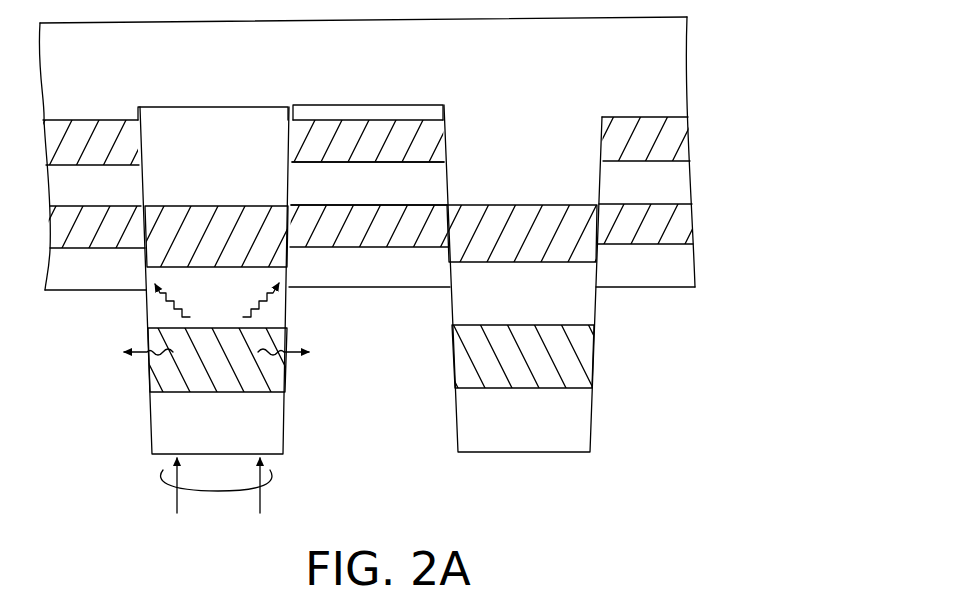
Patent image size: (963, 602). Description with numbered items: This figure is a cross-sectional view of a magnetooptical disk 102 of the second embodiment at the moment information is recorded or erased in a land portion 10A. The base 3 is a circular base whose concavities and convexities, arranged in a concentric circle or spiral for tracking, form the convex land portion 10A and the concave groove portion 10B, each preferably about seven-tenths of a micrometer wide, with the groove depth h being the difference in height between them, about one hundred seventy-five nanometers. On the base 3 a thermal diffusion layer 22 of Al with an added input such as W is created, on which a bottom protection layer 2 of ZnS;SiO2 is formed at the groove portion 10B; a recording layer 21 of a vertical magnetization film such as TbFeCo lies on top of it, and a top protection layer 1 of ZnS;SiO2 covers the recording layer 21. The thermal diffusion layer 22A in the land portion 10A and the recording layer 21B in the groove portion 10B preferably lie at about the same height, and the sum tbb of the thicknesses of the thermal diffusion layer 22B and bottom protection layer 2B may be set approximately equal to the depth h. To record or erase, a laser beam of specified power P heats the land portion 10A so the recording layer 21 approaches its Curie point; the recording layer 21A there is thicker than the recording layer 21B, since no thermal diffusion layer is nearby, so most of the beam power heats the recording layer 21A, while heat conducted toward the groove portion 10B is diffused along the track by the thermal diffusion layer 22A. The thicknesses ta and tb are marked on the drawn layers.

The top protection layer 1 is at (690, 263).
The bottom protection layer 2 is at (688, 189).
The base 3 is at (680, 75).
The recording layer 21 is at (692, 221).
The thermal diffusion layer 22 is at (692, 140).
The land portion 10A is at (207, 107).
The groove portion 10B is at (368, 105).
The recording layer in land portion 21A is at (270, 380).
The thermal diffusion layer in land portion 22A is at (185, 218).
The recording layer in groove portion 21B is at (448, 206).
The thermal diffusion layer in groove portion 22B is at (430, 137).
The bottom protection layer in groove portion 2B is at (430, 175).
The magnetooptical disk 102 is at (766, 96).
The specified power P is at (263, 472).
The depth of groove portion h is at (277, 122).
The thickness ta is at (217, 330).
The thickness tb is at (369, 207).
The sum of film thickness tbb is at (369, 122).